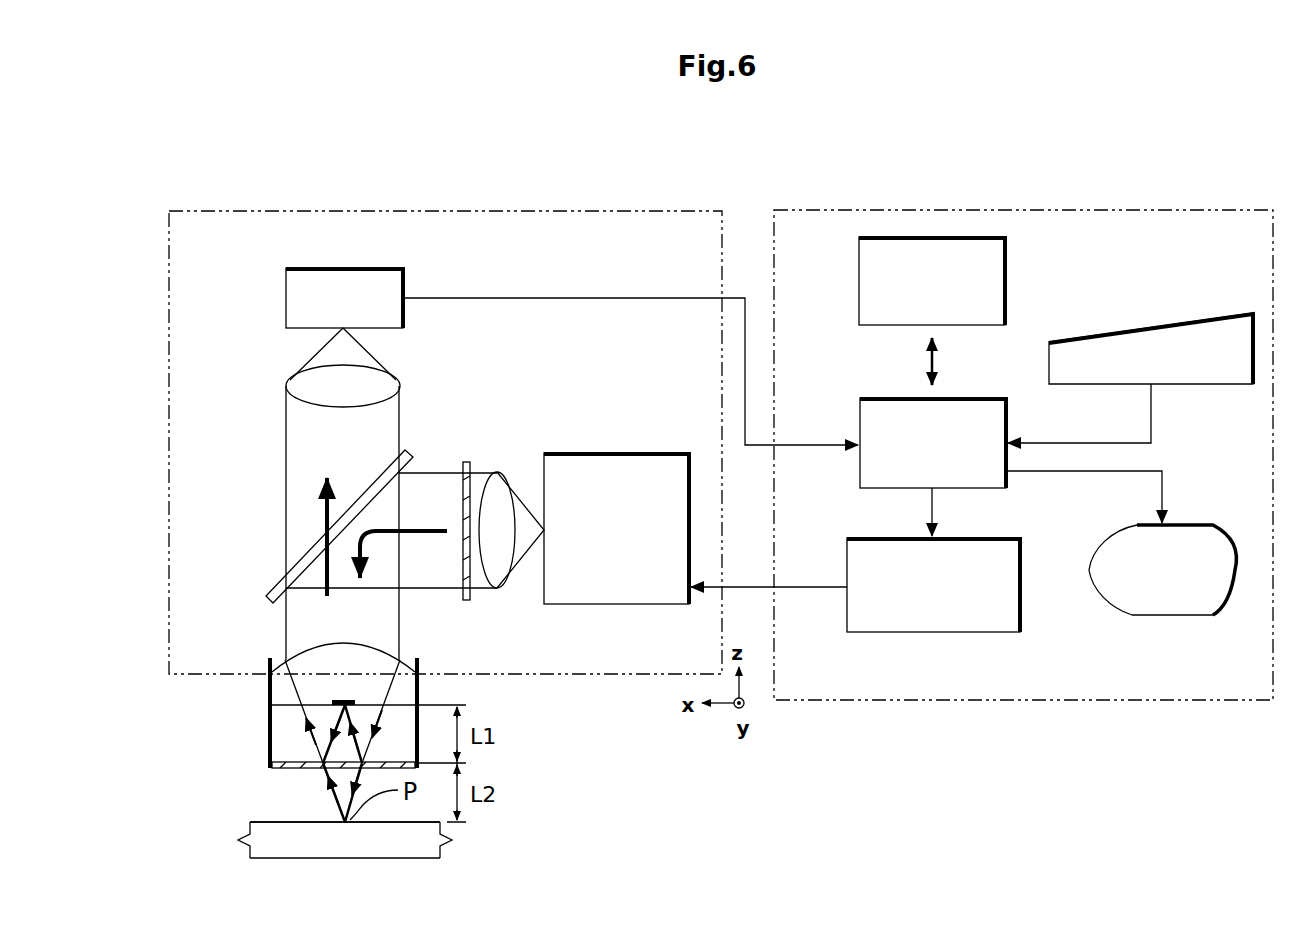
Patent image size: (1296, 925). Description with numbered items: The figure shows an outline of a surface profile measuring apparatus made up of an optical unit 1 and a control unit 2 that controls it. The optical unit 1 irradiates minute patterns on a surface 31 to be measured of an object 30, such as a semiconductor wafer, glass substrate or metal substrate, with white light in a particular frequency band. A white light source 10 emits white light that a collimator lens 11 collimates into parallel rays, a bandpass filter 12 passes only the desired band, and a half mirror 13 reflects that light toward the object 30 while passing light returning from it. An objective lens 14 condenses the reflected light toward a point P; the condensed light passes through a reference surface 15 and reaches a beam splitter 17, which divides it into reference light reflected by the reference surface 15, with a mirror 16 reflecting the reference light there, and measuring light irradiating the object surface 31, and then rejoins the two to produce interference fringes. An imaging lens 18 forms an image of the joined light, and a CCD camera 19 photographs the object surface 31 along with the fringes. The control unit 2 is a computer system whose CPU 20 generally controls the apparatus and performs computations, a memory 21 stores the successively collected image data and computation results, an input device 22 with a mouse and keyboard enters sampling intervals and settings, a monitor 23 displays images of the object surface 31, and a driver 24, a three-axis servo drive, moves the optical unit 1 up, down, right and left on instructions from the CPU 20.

The optical unit 1 is at (340, 211).
The control unit 2 is at (847, 210).
The white light source 10 is at (572, 453).
The collimator lens 11 is at (499, 473).
The bandpass filter 12 is at (467, 462).
The half mirror 13 is at (409, 452).
The objective lens 14 is at (368, 648).
The reference surface 15 is at (282, 705).
The mirror 16 is at (344, 700).
The beam splitter 17 is at (288, 768).
The imaging lens 18 is at (287, 385).
The CCD camera 19 is at (286, 298).
The CPU 20 is at (888, 398).
The memory 21 is at (1006, 282).
The input device 22 is at (1156, 326).
The monitor 23 is at (1161, 616).
The driver 24 is at (932, 632).
The object 30 is at (464, 836).
The surface to be measured 31 is at (264, 821).